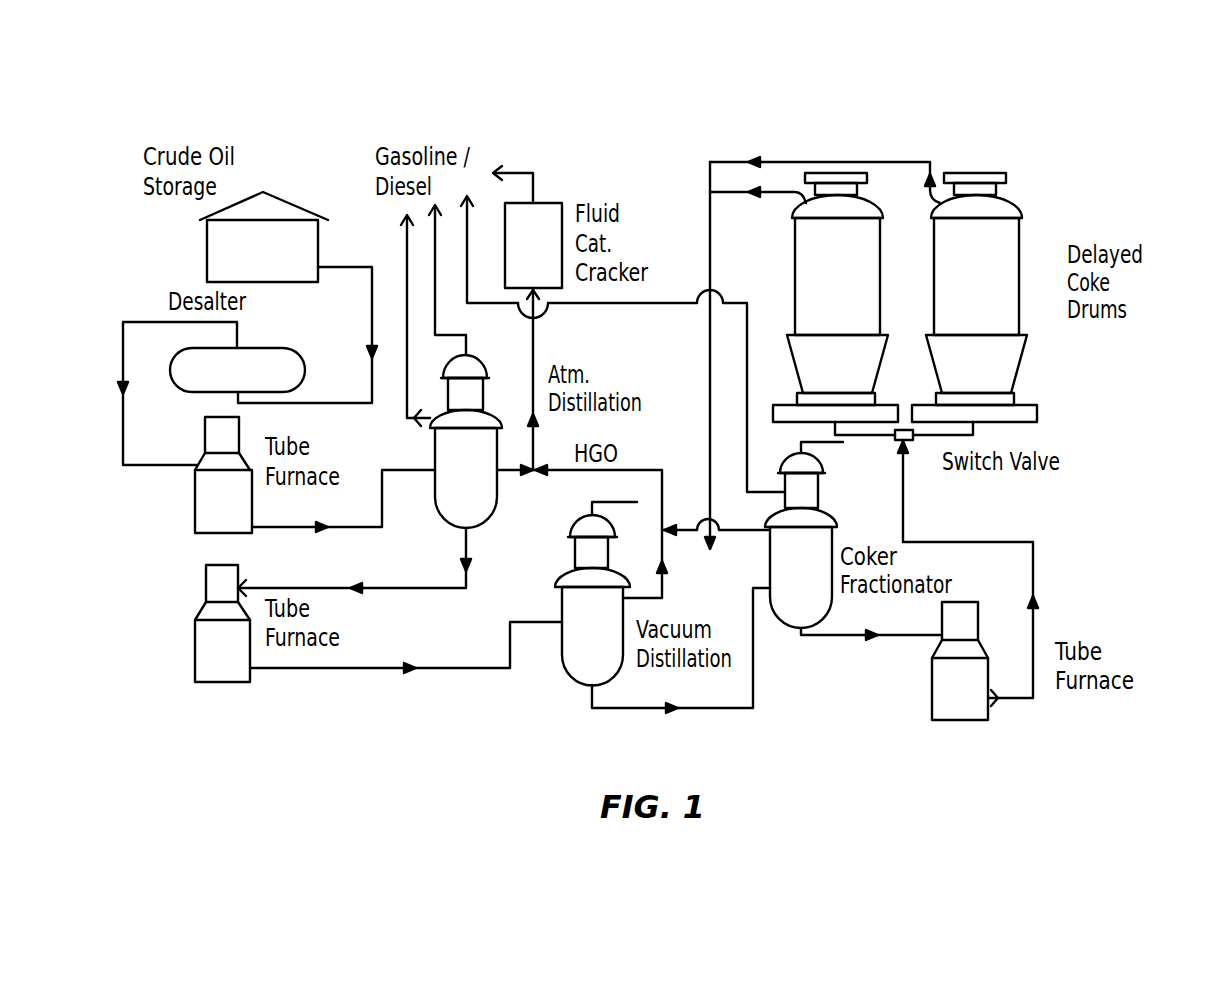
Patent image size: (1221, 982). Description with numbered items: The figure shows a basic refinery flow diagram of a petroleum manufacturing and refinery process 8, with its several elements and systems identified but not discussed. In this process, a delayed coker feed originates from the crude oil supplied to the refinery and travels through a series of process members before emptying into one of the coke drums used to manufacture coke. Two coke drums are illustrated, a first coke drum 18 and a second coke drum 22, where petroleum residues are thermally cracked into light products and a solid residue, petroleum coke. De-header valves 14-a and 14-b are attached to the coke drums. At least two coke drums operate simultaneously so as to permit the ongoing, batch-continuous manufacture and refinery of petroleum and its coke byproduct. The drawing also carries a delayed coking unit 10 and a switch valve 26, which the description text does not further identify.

The refinery 8 is at (280, 108).
The delayed coking unit 10 is at (1040, 120).
The first delayed coke drum 18 is at (867, 203).
The second delayed coke drum 22 is at (1017, 207).
The first drum platform / bottom section 14-a is at (1038, 412).
The second drum platform / bottom section 14-b is at (773, 410).
The switch valve 26 is at (907, 458).